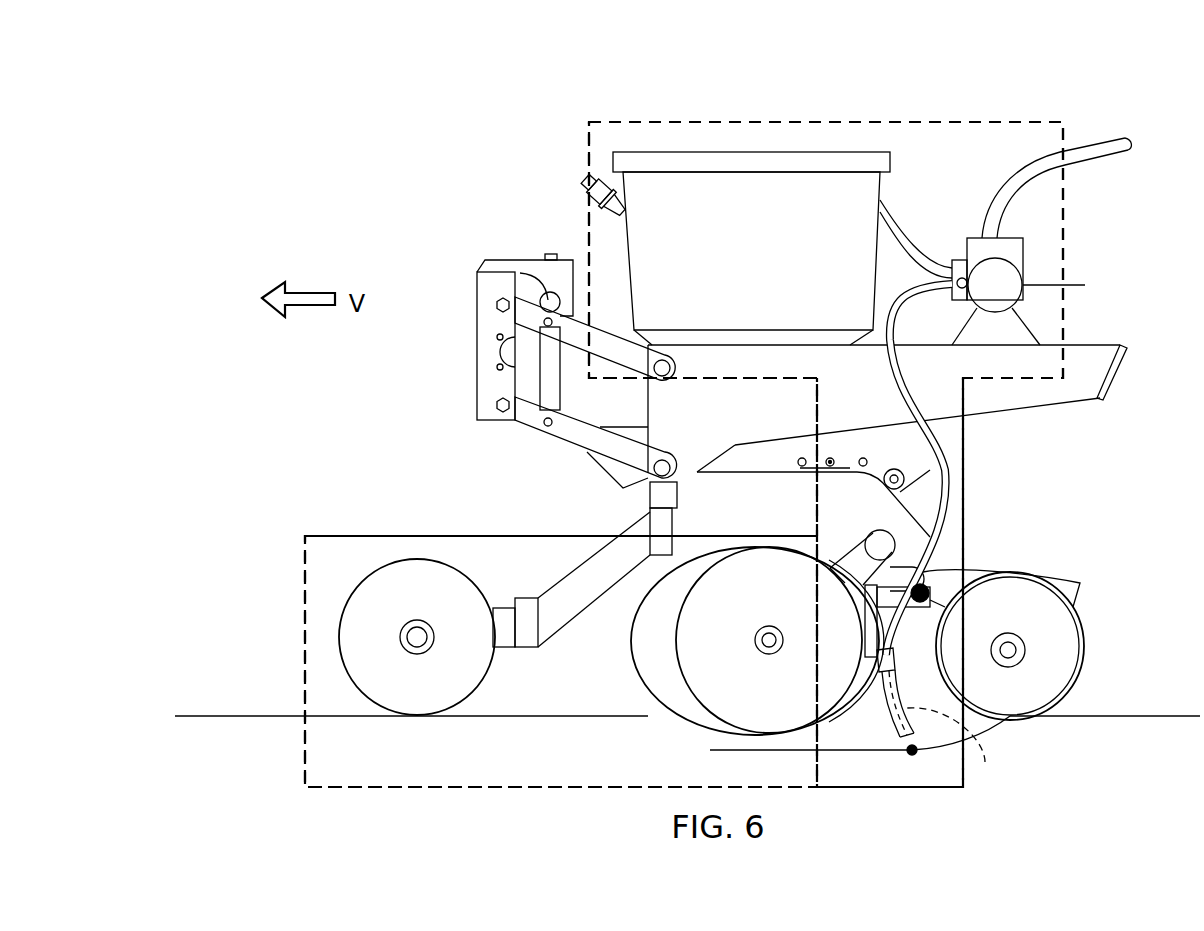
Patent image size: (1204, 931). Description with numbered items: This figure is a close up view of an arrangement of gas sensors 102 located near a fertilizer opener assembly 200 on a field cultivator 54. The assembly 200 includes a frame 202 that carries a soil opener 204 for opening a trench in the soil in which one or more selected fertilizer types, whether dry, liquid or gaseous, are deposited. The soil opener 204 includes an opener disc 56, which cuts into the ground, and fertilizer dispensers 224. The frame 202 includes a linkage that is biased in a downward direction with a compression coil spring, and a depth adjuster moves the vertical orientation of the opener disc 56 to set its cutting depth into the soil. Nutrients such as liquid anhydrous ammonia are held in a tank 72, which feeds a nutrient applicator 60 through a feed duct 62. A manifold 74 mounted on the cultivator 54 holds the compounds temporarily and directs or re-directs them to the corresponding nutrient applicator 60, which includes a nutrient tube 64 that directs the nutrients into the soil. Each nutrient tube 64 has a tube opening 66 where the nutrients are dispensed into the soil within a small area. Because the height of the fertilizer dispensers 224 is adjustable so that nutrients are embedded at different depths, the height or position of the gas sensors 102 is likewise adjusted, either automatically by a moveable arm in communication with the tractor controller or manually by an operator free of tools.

The fertilizer opener assembly 200 is at (913, 92).
The field cultivator 54 is at (718, 143).
The anhydrous ammonia tank 72 is at (737, 262).
The manifold 74 is at (1010, 256).
The feed duct 62 is at (945, 448).
The nutrient applicator 60 is at (963, 487).
The gas sensor 102 is at (925, 585).
The frame 202 is at (697, 503).
The soil opener 204 is at (305, 640).
The opener disc 56 is at (692, 722).
The fertilizer dispenser 224 is at (869, 680).
The tube opening 66 is at (912, 755).
The nutrient tube 64 is at (958, 746).